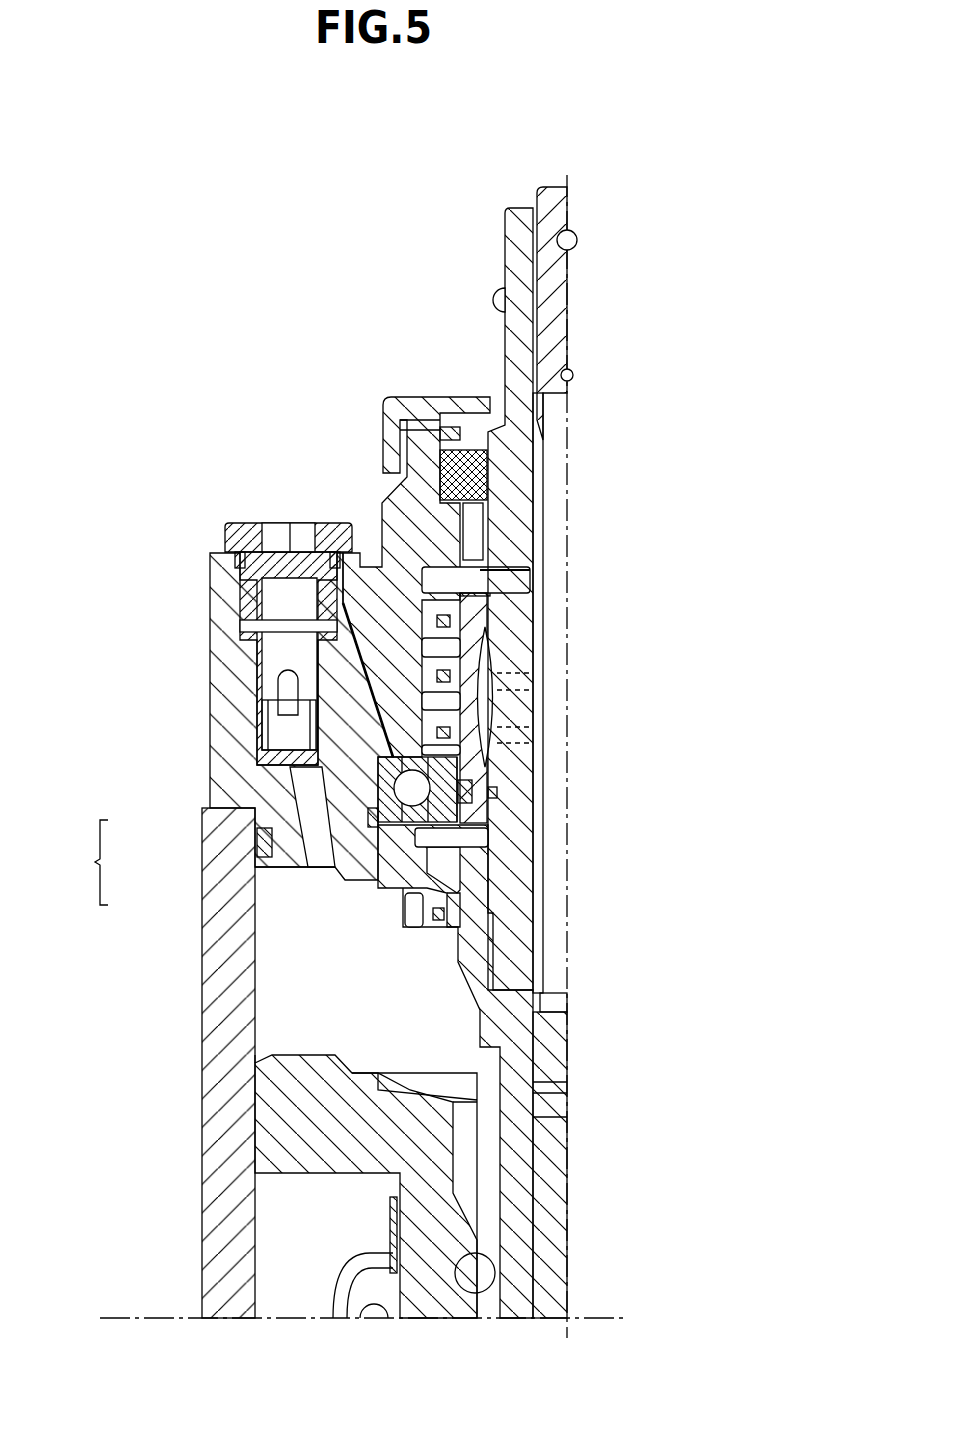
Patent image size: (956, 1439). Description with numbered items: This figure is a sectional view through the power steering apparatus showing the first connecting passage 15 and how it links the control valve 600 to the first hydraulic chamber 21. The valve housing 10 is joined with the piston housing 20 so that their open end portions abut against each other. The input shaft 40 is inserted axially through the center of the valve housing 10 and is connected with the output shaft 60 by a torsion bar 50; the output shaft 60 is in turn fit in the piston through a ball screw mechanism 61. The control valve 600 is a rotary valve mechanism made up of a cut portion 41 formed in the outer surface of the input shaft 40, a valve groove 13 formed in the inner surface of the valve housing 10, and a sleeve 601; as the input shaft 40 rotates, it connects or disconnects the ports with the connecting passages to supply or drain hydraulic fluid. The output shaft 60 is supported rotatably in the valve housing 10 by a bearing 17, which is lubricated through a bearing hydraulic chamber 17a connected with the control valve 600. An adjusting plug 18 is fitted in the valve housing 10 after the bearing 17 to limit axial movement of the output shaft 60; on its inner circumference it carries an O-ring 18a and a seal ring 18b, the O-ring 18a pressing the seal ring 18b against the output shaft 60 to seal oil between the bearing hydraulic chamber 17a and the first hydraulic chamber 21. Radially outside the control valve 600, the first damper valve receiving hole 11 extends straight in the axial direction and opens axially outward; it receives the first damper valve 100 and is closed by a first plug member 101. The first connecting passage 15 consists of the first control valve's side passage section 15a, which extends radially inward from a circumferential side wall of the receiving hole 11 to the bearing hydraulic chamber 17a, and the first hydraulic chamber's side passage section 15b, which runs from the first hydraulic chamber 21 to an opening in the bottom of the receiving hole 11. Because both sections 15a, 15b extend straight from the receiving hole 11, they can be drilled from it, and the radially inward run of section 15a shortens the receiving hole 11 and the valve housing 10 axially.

The valve housing 10 is at (407, 388).
The first damper valve receiving hole 11 is at (262, 699).
The valve groove 13 is at (450, 643).
The first connecting passage 15 is at (84, 862).
The first control valve's side passage section 15a is at (382, 738).
The first hydraulic chamber's side passage section 15b is at (310, 843).
The bearing 17 is at (437, 808).
The bearing hydraulic chamber 17a is at (463, 745).
The adjusting plug 18 is at (392, 882).
The O-ring 18a is at (418, 928).
The seal ring 18b is at (440, 921).
The piston housing 20 is at (202, 1222).
The first hydraulic chamber 21 is at (295, 995).
The input shaft 40 is at (520, 218).
The cut portion 41 is at (493, 704).
The torsion bar 50 is at (546, 300).
The output shaft 60 is at (542, 1190).
The ball screw mechanism 61 is at (487, 1270).
The first damper valve 100 is at (262, 688).
The first plug member 101 is at (248, 525).
The control valve 600 is at (489, 622).
The sleeve 601 is at (470, 733).